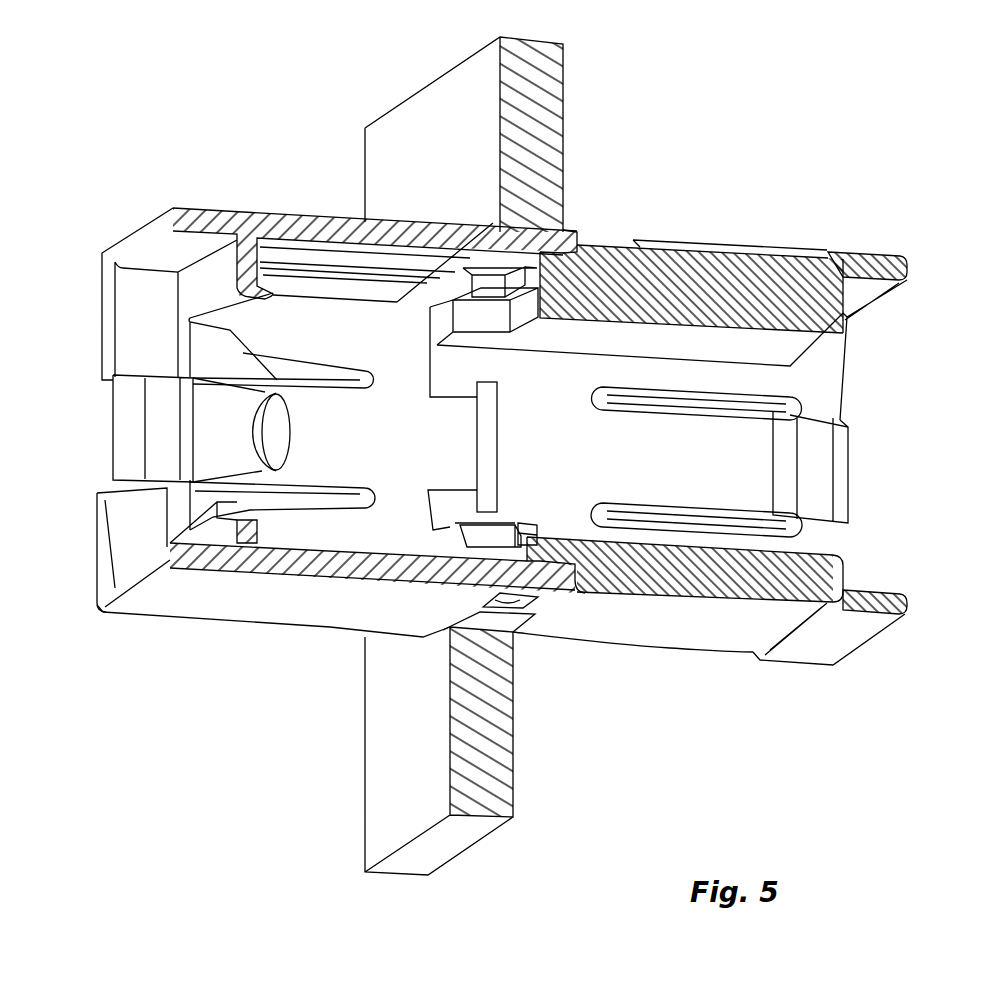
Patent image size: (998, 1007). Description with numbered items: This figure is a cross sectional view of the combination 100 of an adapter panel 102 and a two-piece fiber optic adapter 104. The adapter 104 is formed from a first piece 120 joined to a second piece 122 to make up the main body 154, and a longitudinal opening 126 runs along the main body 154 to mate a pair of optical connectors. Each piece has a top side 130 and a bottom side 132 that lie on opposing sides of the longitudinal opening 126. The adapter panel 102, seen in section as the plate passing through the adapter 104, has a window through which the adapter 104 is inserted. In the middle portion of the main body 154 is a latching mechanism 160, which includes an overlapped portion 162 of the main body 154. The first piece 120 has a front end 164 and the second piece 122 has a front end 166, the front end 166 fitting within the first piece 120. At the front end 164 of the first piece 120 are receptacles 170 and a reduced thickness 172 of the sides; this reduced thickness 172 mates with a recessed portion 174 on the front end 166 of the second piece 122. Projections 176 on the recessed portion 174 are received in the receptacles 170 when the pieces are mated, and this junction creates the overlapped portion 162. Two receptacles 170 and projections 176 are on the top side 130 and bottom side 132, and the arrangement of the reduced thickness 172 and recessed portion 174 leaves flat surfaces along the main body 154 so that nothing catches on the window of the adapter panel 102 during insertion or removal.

The combination 100 is at (854, 146).
The adapter panel 102 is at (387, 112).
The two-piece fiber optic adapter 104 is at (732, 676).
The first piece 120 is at (142, 619).
The second piece 122 is at (869, 628).
The longitudinal opening 126 is at (410, 463).
The top side 130 is at (884, 254).
The bottom side 132 is at (275, 606).
The main body 154 is at (223, 621).
The latching mechanism 160 is at (541, 613).
The overlapped portion 162 is at (537, 547).
The front end of the first piece 164 is at (492, 560).
The front end of the second piece 166 is at (609, 209).
The receptacles 170 is at (497, 597).
The reduced thickness 172 is at (571, 237).
The recessed portion 174 is at (493, 230).
The projections 176 is at (543, 591).